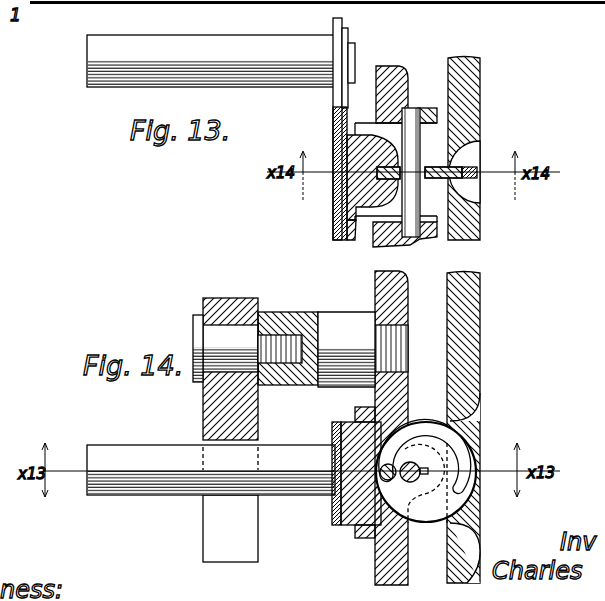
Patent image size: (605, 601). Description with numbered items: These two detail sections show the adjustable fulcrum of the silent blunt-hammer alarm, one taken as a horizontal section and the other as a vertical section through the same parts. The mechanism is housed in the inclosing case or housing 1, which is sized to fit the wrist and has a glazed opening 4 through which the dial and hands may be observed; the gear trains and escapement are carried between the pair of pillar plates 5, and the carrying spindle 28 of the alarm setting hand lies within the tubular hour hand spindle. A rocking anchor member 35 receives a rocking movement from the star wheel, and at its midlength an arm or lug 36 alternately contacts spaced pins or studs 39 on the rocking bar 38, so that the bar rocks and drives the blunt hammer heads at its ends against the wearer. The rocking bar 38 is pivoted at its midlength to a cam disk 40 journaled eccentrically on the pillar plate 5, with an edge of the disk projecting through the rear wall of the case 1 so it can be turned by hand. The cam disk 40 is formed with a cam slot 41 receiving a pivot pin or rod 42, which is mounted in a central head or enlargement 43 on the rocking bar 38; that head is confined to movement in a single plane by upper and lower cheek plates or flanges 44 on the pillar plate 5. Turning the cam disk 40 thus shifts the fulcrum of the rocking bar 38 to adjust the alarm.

In FIG. 13, the inclosing case or housing 1 is at (481, 83).
In FIG. 14, the inclosing case or housing 1 is at (480, 318).
In FIG. 13, the glazed opening 4 is at (113, 0).
In FIG. 13, the pillar plates 5 is at (398, 66).
In FIG. 14, the pillar plates 5 is at (402, 273).
In FIG. 13, the carrying spindle of the alarm setting hand 28 is at (354, 0).
In FIG. 14, the rocking anchor member 35 is at (213, 415).
In FIG. 14, the arm or lug 36 is at (213, 540).
In FIG. 13, the rocking bar 38 is at (336, 108).
In FIG. 14, the rocking bar 38 is at (335, 532).
In FIG. 13, the spaced pins or studs 39 is at (210, 61).
In FIG. 14, the spaced pins or studs 39 is at (138, 482).
In FIG. 13, the cam disk 40 is at (440, 160).
In FIG. 14, the cam disk 40 is at (462, 498).
In FIG. 13, the cam slot 41 is at (467, 165).
In FIG. 14, the cam slot 41 is at (425, 432).
In FIG. 13, the pivot pin or rod 42 is at (376, 180).
In FIG. 14, the pivot pin or rod 42 is at (345, 440).
In FIG. 13, the central head or enlargement 43 is at (362, 205).
In FIG. 14, the central head or enlargement 43 is at (352, 523).
In FIG. 13, the upper and lower cheek plates or flanges 44 is at (368, 216).
In FIG. 14, the upper and lower cheek plates or flanges 44 is at (353, 412).